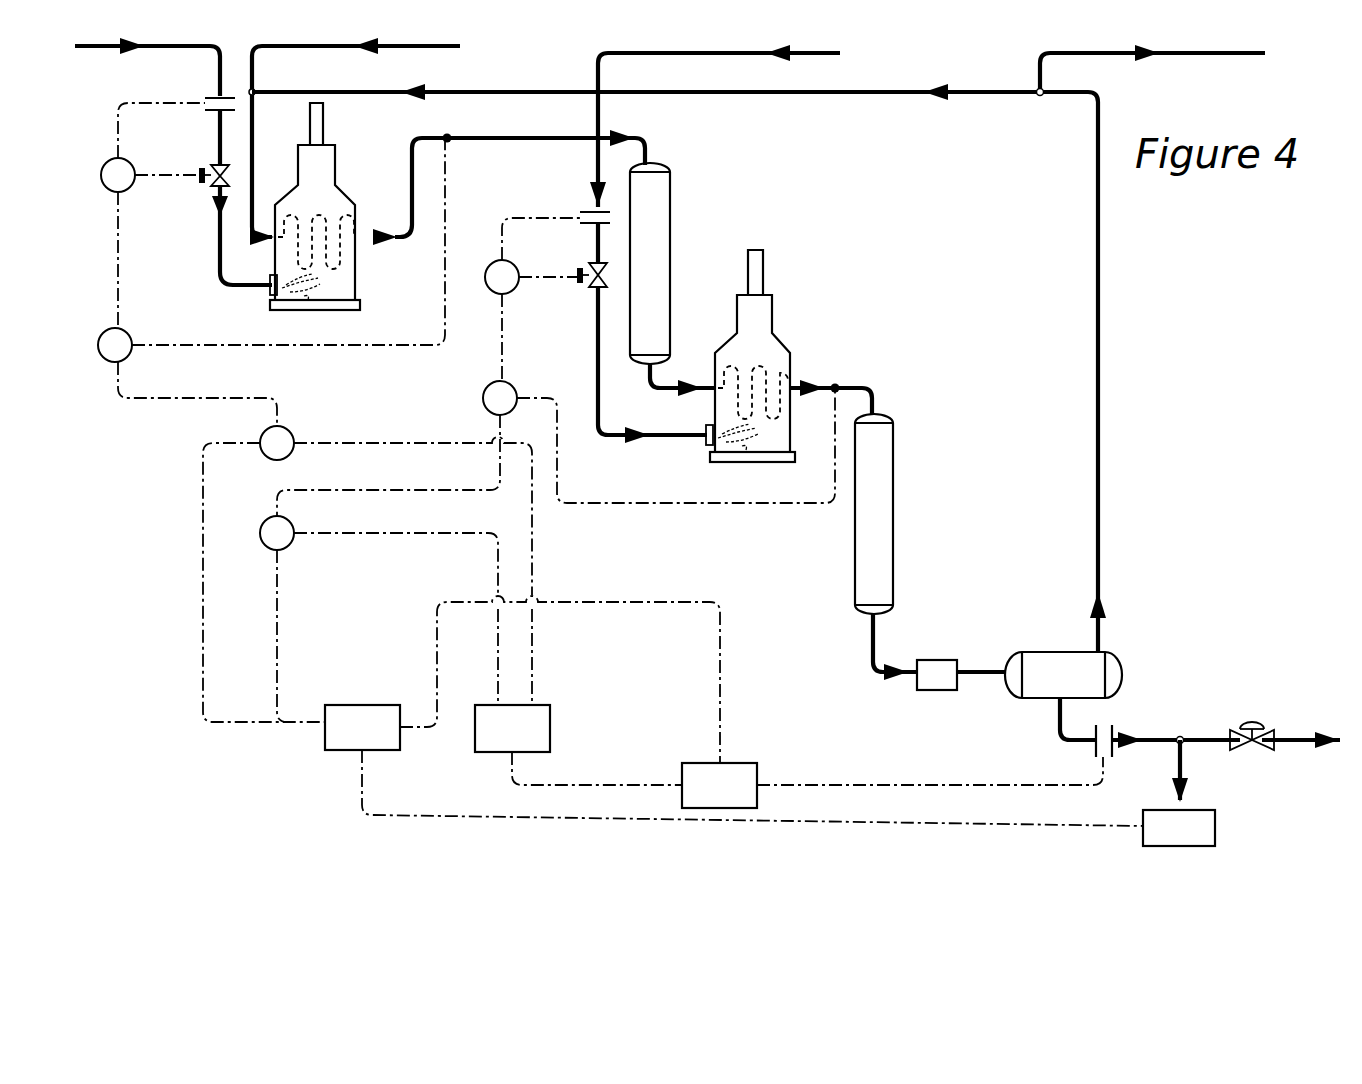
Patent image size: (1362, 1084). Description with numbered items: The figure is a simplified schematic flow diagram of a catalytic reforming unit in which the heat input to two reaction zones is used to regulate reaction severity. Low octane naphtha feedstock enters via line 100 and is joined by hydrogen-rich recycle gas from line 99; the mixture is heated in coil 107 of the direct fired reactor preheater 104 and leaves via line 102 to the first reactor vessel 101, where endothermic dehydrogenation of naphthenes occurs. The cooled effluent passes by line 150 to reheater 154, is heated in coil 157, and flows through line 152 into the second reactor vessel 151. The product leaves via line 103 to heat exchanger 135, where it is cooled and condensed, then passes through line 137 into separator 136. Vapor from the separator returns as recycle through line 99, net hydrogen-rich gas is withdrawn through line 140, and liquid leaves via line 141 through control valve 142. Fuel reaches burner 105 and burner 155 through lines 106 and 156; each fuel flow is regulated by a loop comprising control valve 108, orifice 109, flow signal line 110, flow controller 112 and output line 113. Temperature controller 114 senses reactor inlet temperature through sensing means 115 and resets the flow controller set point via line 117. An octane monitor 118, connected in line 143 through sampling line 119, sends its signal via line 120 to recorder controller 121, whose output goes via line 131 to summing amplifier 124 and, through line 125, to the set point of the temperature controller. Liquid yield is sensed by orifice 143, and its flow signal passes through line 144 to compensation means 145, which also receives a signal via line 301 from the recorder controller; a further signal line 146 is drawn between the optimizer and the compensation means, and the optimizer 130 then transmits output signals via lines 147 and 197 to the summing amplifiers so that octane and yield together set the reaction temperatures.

The recycle gas line 99 is at (485, 92).
The feed line 100 is at (382, 55).
The reactor vessel 101 is at (672, 214).
The preheater outlet line 102 is at (505, 137).
The second reactor outlet line 103 is at (870, 632).
The reactor preheater 104 is at (335, 195).
The burner 105 is at (300, 308).
The fuel line 106 is at (220, 72).
The coil 107 is at (345, 258).
The control valve 108 is at (212, 190).
The flow sensing means 109 is at (208, 112).
The flow signal line 110 is at (138, 103).
The flow controller 112 is at (108, 190).
The output signal line 113 is at (185, 175).
The temperature controller 114 is at (122, 333).
The temperature sensing means 115 is at (447, 134).
The temperature output signal line 117 is at (113, 272).
The octane monitor 118 is at (1215, 830).
The sampling line 119 is at (1182, 778).
The octane monitor output signal line 120 is at (490, 800).
The recorder controller 121 is at (355, 703).
The summing amplifier 124 is at (292, 435).
The set point signal line 125 is at (188, 398).
The optimizer 130 is at (552, 722).
The controller output line 131 is at (270, 580).
The heat exchanger 135 is at (926, 660).
The separator 136 is at (1062, 650).
The separator inlet line 137 is at (985, 688).
The net gas line 140 is at (1120, 58).
The liquid withdrawal line 141 is at (1058, 717).
The control valve 142 is at (1248, 752).
The flow sensing means 143 is at (1114, 726).
The flow signal line 144 is at (876, 785).
The compensation means 145 is at (758, 766).
The module signal line 146 is at (580, 785).
The optimizer output line 147 is at (408, 443).
The first reactor effluent line 150 is at (692, 392).
The reactor vessel 151 is at (895, 482).
The reheater outlet line 152 is at (796, 385).
The reheater 154 is at (788, 350).
The burner 155 is at (727, 458).
The fuel line 156 is at (795, 55).
The coil 157 is at (788, 420).
The optimizer output line 197 is at (332, 533).
The controller signal line 301 is at (590, 600).